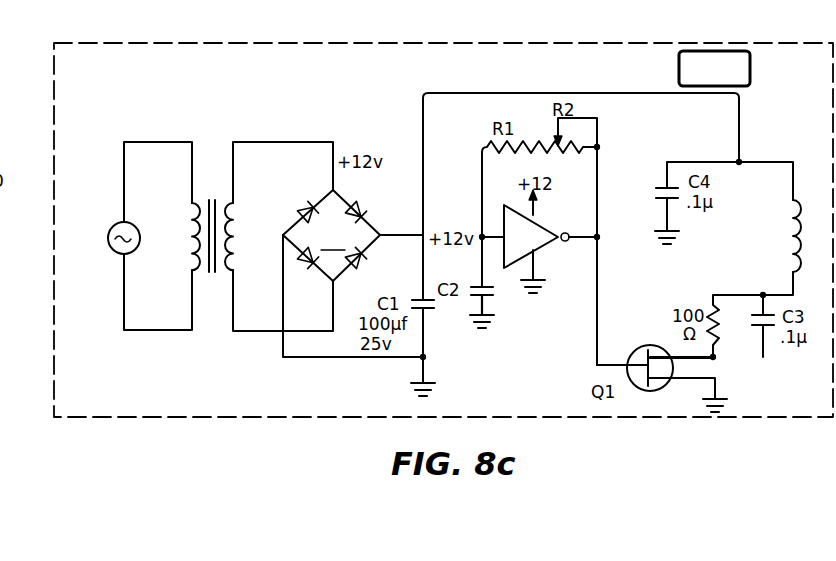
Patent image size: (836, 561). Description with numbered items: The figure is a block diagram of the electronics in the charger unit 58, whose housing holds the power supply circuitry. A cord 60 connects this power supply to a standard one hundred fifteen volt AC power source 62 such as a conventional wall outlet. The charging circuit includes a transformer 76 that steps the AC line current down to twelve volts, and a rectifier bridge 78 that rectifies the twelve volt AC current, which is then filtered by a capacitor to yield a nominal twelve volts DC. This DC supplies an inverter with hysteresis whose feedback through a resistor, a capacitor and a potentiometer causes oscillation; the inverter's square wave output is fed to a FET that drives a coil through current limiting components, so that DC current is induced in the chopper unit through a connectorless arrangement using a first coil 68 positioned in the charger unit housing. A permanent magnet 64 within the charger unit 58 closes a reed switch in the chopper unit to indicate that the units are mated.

The charger unit 58 is at (49, 79).
The cord 60 is at (190, 142).
The AC power source 62 is at (108, 238).
The permanent magnet 64 is at (679, 64).
The first coil 68 is at (823, 173).
The transformer 76 is at (231, 199).
The rectifier bridge 78 is at (352, 203).